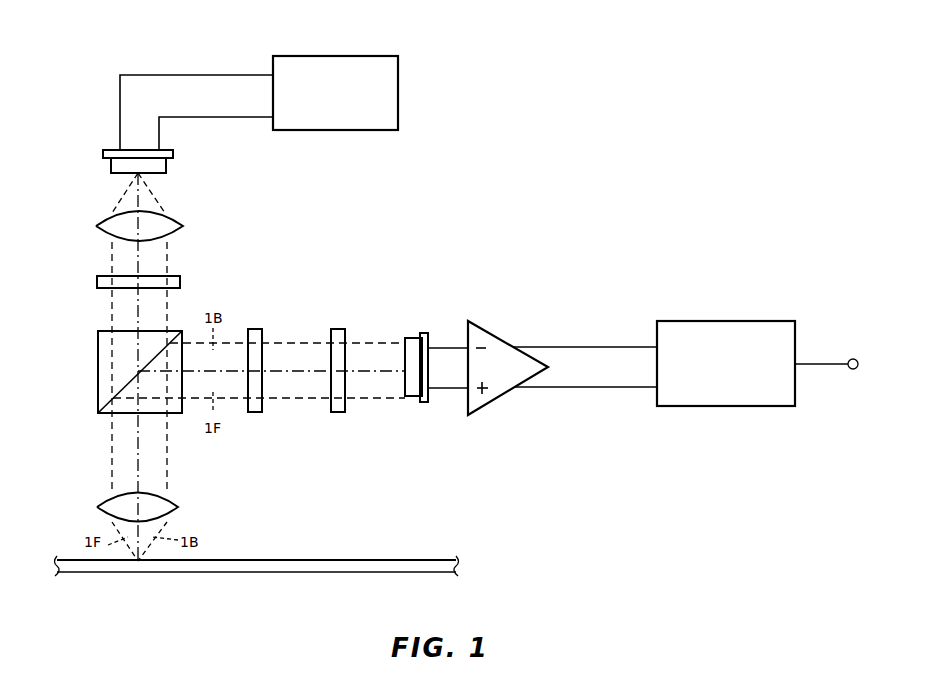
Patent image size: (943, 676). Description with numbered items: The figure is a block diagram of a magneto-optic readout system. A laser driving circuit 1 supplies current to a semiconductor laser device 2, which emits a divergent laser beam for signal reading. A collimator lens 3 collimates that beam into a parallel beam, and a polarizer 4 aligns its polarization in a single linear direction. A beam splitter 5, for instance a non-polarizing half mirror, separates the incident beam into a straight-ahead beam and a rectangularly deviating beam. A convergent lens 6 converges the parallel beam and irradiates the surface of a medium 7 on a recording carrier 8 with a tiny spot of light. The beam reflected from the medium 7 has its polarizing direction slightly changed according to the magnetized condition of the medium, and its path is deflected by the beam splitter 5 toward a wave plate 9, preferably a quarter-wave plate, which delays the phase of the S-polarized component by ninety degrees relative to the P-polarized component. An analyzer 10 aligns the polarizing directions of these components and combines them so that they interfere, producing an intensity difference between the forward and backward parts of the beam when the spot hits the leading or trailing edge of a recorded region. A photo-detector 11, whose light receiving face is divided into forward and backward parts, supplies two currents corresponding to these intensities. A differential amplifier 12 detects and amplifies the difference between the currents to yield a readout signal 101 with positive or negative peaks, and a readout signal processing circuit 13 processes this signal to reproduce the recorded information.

The laser driving circuit 1 is at (398, 80).
The semiconductor laser device 2 is at (111, 165).
The collimator lens 3 is at (183, 227).
The polarizer 4 is at (97, 282).
The beam splitter 5 is at (98, 371).
The convergent lens 6 is at (178, 508).
The medium 7 is at (385, 560).
The recording carrier 8 is at (462, 563).
The wave plate 9 is at (252, 329).
The analyzer 10 is at (338, 412).
The photo-detector 11 is at (424, 333).
The differential amplifier 12 is at (488, 403).
The readout signal processing circuit 13 is at (750, 321).
The readout signal 101 is at (595, 347).